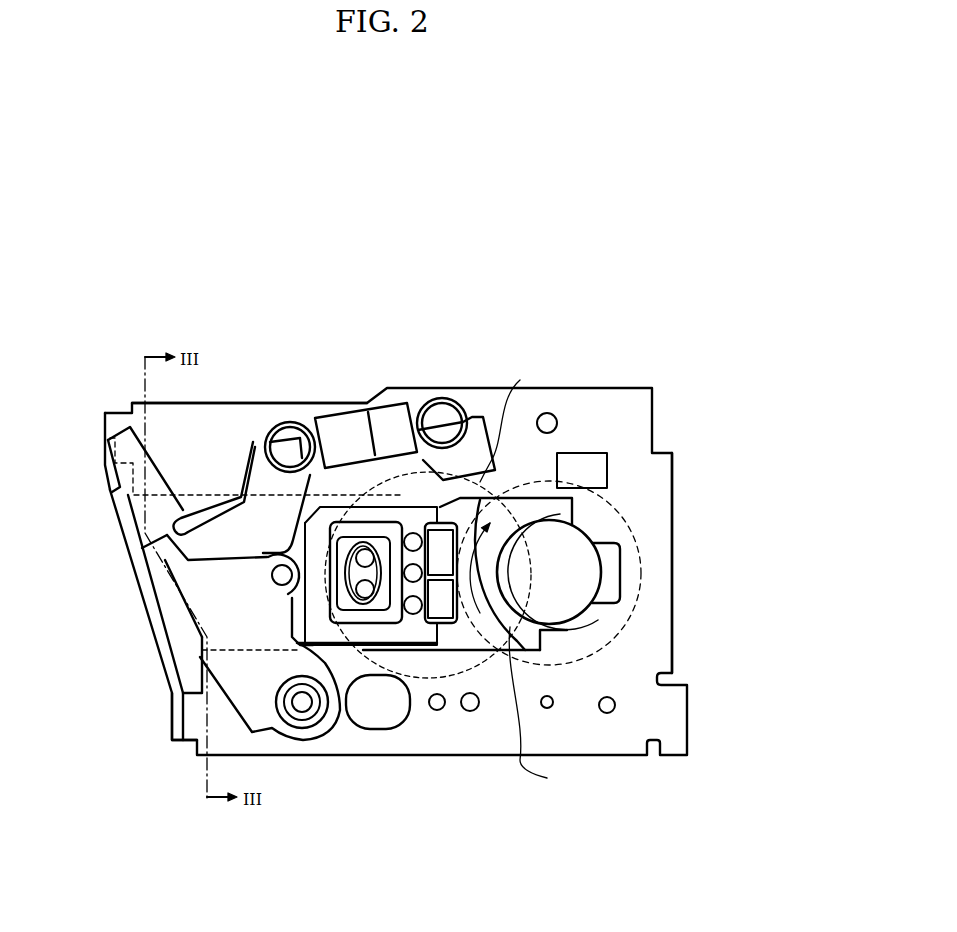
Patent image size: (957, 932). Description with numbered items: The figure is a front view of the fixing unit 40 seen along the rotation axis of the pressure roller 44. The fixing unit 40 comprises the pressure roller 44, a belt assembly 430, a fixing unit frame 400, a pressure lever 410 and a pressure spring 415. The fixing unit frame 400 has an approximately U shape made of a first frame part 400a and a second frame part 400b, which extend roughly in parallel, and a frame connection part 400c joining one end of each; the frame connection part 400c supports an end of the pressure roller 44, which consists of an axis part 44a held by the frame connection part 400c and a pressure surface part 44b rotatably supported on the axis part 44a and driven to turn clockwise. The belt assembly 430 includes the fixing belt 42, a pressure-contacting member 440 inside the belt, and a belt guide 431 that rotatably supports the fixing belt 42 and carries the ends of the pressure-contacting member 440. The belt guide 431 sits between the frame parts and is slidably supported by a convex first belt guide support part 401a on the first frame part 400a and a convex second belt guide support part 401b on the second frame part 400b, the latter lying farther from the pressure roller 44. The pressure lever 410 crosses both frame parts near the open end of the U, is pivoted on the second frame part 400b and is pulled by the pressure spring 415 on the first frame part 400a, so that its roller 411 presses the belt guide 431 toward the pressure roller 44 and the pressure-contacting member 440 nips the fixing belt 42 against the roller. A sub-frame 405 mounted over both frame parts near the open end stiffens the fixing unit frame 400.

The fixing unit 40 is at (640, 270).
The fixing unit frame 400 is at (618, 380).
The first frame part 400a is at (215, 425).
The second frame part 400b is at (375, 742).
The frame connection part 400c is at (653, 573).
The first belt guide support part 401a is at (512, 418).
The second belt guide support part 401b is at (230, 605).
The sub-frame 405 is at (170, 710).
The pressure lever 410 is at (222, 618).
The roller 411 is at (137, 552).
The pressure spring 415 is at (340, 427).
The belt assembly 430 is at (120, 522).
The belt guide 431 is at (404, 530).
The pressure-contacting member 440 is at (437, 653).
The fixing belt 42 is at (477, 627).
The pressure roller 44 is at (640, 627).
The axis part 44a is at (557, 573).
The pressure surface part 44b is at (555, 710).